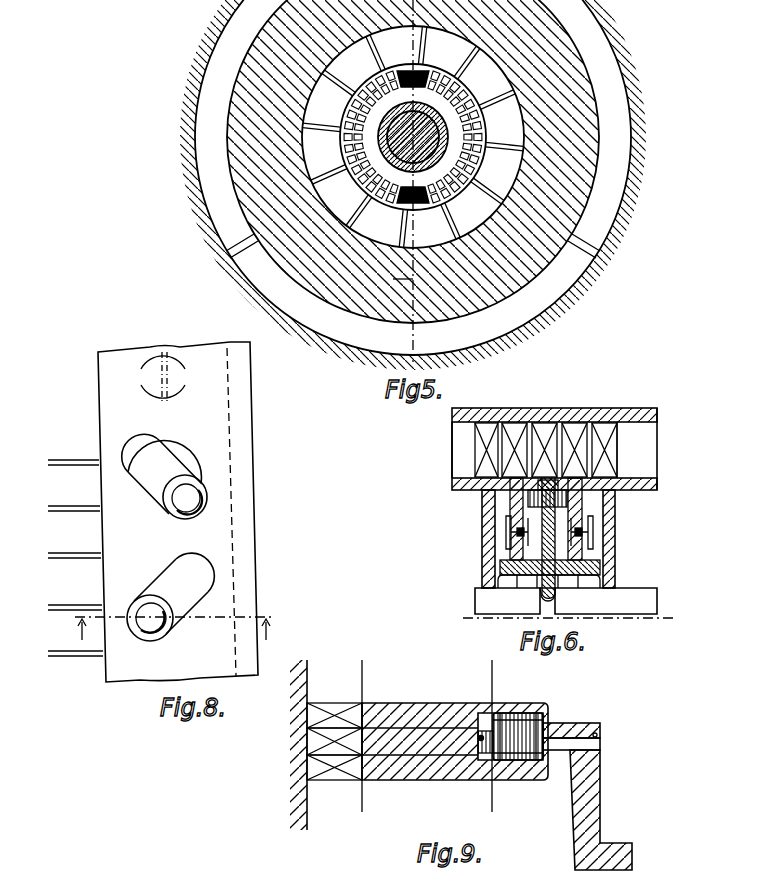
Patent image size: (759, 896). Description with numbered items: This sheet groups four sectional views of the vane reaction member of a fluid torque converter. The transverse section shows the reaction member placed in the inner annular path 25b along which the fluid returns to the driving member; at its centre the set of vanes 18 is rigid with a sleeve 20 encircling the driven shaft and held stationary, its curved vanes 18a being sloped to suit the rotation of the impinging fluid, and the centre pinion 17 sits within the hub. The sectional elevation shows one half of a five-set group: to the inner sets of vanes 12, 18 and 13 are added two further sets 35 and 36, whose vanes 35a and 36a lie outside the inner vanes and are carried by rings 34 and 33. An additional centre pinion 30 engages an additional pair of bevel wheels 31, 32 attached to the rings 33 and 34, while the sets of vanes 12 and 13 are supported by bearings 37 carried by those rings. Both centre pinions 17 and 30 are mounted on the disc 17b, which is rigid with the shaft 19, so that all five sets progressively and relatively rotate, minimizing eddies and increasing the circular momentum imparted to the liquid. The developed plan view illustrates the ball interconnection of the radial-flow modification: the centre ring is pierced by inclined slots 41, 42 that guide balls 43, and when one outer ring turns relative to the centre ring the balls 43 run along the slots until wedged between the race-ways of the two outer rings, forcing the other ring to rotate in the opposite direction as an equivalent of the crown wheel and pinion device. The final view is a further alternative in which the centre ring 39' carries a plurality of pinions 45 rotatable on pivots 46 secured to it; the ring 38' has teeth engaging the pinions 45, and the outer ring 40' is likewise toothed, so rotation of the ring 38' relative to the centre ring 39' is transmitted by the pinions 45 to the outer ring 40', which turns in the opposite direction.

In FIG. 5, the sleeve 20 is at (378, 128).
In FIG. 5, the vanes 18a is at (474, 52).
In FIG. 5, the centre pinion 17 is at (410, 208).
In FIG. 6, the centre pinion 17 is at (565, 506).
In FIG. 5, the inner annular path 25b is at (505, 160).
In FIG. 8, the inclined slot 41 is at (162, 468).
In FIG. 8, the inclined slot 42 is at (195, 572).
In FIG. 8, the balls 43 is at (192, 502).
In FIG. 6, the set of vanes 35 is at (487, 430).
In FIG. 6, the set of vanes 12 is at (515, 425).
In FIG. 6, the set of vanes 18 is at (545, 425).
In FIG. 6, the set of vanes 13 is at (573, 428).
In FIG. 6, the set of vanes 36 is at (607, 428).
In FIG. 6, the vanes 35a is at (475, 440).
In FIG. 6, the vanes 36a is at (618, 452).
In FIG. 6, the bearings 37 is at (506, 532).
In FIG. 6, the ring 34 is at (488, 540).
In FIG. 6, the disc 17b is at (556, 550).
In FIG. 6, the bevel wheel 31 is at (502, 566).
In FIG. 6, the ring 33 is at (600, 572).
In FIG. 6, the shaft 19 is at (648, 597).
In FIG. 6, the centre pinion 30 is at (540, 570).
In FIG. 6, the bevel wheel 32 is at (597, 568).
In FIG. 9, the ring 38' is at (359, 781).
In FIG. 9, the centre ring 39' is at (392, 716).
In FIG. 9, the outer ring 40' is at (385, 703).
In FIG. 9, the pivots 46 is at (481, 745).
In FIG. 9, the pinions 45 is at (530, 730).